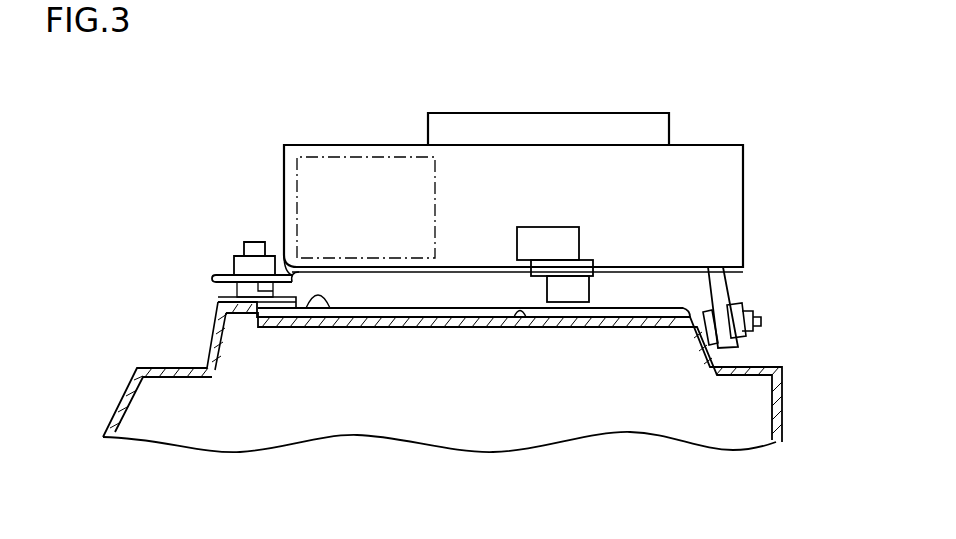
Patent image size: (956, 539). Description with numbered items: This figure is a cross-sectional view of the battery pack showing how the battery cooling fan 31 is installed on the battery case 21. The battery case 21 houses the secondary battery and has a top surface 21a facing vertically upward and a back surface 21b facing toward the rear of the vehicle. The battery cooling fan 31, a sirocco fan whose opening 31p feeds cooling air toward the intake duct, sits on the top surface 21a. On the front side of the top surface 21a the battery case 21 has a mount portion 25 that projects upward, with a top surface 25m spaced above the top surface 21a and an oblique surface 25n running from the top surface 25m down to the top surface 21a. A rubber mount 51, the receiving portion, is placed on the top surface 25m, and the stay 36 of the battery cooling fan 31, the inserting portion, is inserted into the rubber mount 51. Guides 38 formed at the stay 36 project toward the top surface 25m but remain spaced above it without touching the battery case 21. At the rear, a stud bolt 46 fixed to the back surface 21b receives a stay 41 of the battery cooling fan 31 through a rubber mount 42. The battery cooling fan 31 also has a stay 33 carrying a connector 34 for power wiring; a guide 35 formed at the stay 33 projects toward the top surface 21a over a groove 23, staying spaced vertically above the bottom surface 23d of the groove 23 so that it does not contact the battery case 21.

The battery case 21 is at (122, 402).
The top surface 21a is at (358, 298).
The back surface 21b is at (712, 362).
The groove 23 is at (478, 310).
The bottom surface 23d is at (518, 317).
The mount portion 25 is at (218, 303).
The top surface 25m is at (225, 295).
The oblique surface 25n is at (330, 300).
The battery cooling fan 31 is at (385, 145).
The opening 31p is at (332, 177).
The stay 33 is at (583, 267).
The connector 34 is at (550, 240).
The guide 35 is at (570, 290).
The stay 36 is at (228, 278).
The guide 38 is at (283, 292).
The stay 41 is at (718, 292).
The rubber mount 42 is at (737, 308).
The stud bolt 46 is at (762, 320).
The rubber mount 51 is at (236, 262).